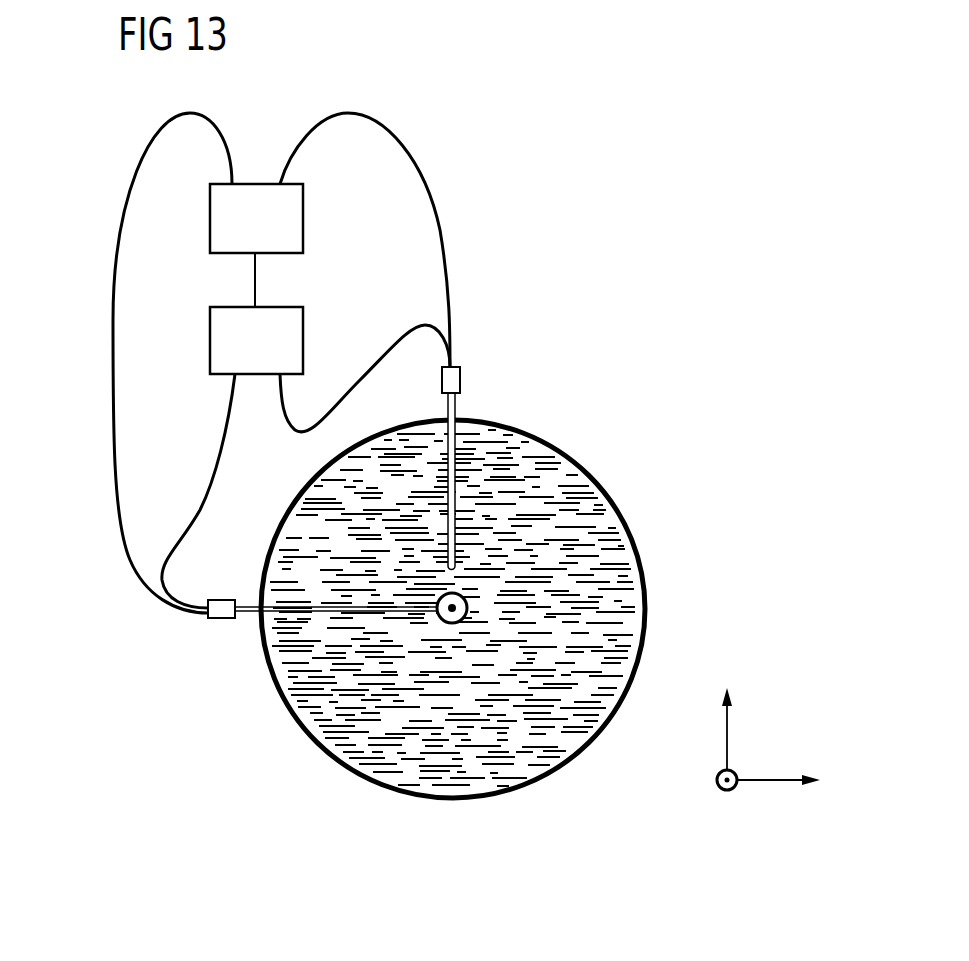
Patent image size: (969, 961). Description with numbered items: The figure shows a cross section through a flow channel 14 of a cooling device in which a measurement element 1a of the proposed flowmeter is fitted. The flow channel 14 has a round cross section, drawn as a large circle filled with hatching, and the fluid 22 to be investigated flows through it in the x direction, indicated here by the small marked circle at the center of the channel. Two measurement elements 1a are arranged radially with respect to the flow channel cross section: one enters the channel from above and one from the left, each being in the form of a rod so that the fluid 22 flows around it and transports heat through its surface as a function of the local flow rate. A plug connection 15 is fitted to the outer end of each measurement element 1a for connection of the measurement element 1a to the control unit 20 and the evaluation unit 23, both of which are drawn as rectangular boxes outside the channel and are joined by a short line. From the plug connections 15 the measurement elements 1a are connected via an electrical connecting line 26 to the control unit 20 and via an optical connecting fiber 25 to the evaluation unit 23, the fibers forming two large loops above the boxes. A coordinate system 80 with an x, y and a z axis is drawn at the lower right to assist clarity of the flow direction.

The measurement element 1a is at (460, 493).
The flow channel 14 is at (610, 495).
The plug connection 15 is at (460, 380).
The control unit 20 is at (210, 342).
The fluid 22 is at (467, 608).
The evaluation unit 23 is at (210, 219).
The optical connecting fiber 25 is at (113, 410).
The electrical connecting line 26 is at (293, 433).
The coordinate system 80 is at (782, 724).